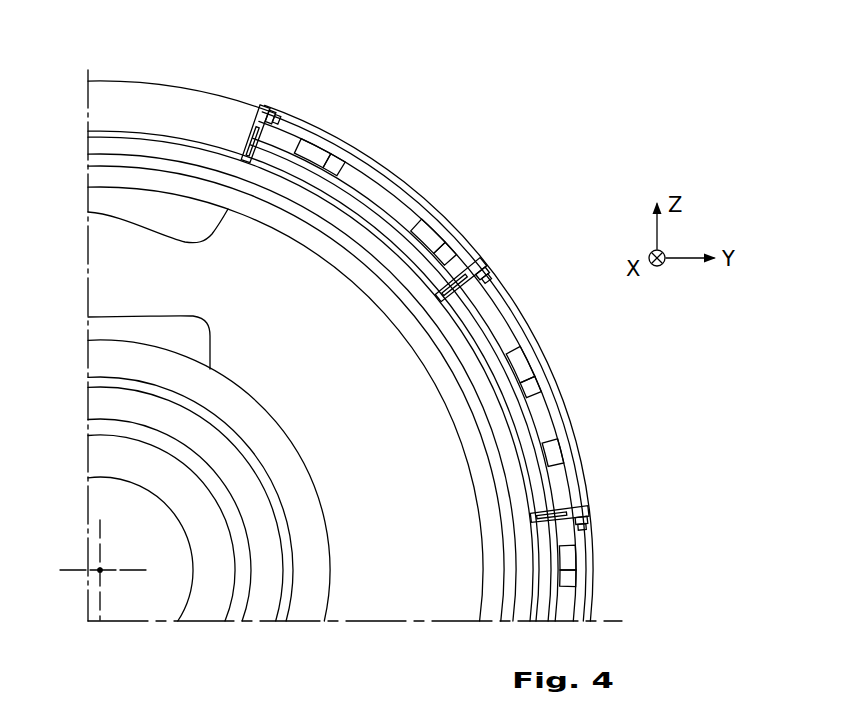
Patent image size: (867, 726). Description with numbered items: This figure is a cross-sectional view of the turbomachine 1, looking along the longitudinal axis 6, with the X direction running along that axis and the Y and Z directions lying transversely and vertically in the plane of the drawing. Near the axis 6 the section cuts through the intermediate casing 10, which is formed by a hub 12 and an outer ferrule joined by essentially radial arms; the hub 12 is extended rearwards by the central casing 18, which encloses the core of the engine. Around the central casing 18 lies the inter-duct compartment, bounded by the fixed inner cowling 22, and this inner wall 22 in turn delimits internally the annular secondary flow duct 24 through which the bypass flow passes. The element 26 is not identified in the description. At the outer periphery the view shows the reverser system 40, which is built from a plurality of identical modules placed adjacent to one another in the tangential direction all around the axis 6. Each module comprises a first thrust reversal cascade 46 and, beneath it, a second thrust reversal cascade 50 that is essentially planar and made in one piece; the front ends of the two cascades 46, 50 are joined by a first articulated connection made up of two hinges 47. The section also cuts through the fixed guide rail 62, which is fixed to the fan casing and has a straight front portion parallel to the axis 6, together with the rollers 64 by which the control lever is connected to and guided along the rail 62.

The turbomachine 1 is at (466, 140).
The longitudinal axis 6 is at (99, 569).
The intermediate casing 10 is at (338, 584).
The hub 12 is at (304, 592).
The central casing 18 is at (242, 592).
The inner cowling 22 is at (88, 317).
The secondary flow duct 24 is at (378, 427).
The arm 26 is at (88, 212).
The reverser system 40 is at (433, 336).
The first thrust reversal cascade 46 is at (371, 162).
The hinges 47 is at (322, 150).
The second thrust reversal cascade 50 is at (391, 208).
The fixed guide rail 62 is at (472, 274).
The roller 64 is at (249, 132).